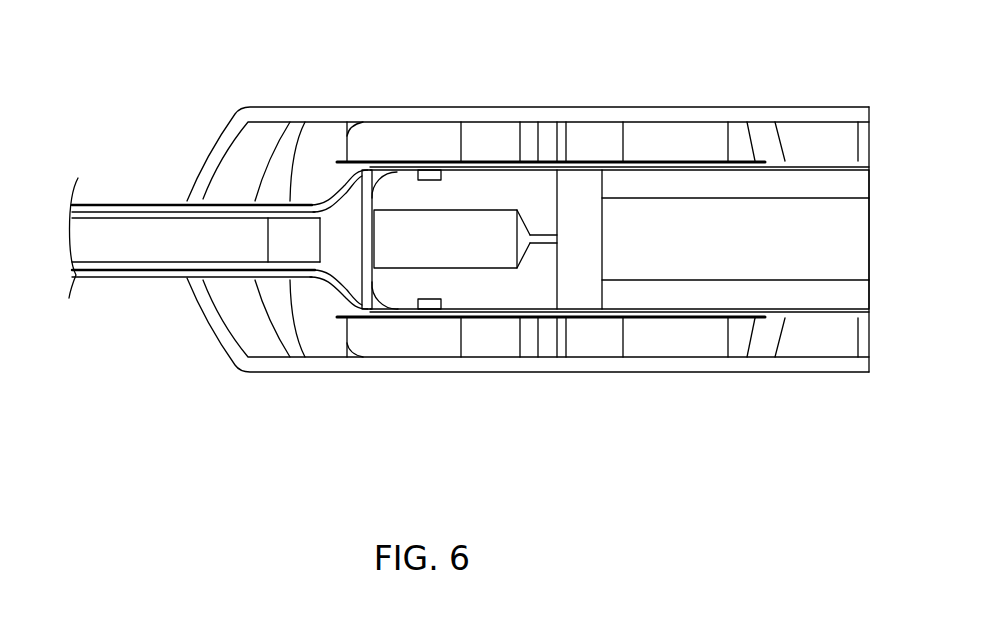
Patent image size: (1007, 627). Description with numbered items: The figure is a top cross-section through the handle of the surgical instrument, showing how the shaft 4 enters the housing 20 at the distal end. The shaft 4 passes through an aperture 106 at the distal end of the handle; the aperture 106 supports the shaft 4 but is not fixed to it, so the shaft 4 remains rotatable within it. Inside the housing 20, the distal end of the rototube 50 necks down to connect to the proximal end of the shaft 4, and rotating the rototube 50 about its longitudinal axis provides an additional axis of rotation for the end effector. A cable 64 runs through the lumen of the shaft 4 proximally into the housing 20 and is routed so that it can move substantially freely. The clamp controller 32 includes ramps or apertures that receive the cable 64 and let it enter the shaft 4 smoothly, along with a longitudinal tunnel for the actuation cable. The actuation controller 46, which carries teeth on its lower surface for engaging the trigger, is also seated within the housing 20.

The shaft 4 is at (157, 207).
The cable 64 is at (115, 205).
The aperture 106 is at (193, 278).
The housing 20 is at (782, 107).
The rototube 50 is at (593, 158).
The clamp controller 32 is at (557, 287).
The actuation controller 46 is at (600, 255).